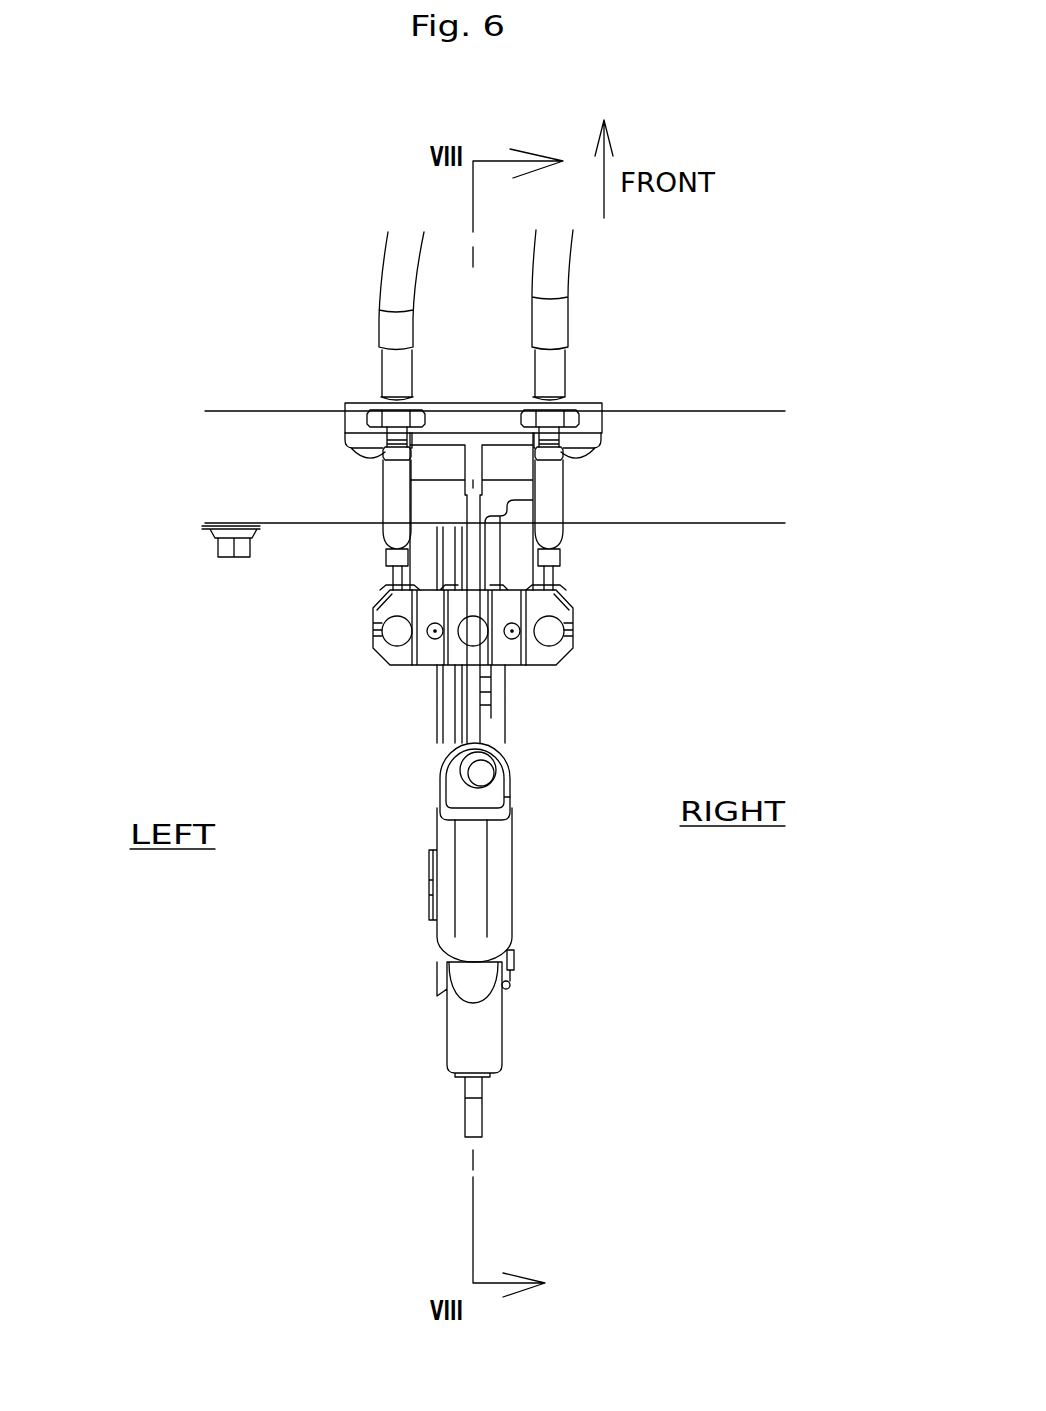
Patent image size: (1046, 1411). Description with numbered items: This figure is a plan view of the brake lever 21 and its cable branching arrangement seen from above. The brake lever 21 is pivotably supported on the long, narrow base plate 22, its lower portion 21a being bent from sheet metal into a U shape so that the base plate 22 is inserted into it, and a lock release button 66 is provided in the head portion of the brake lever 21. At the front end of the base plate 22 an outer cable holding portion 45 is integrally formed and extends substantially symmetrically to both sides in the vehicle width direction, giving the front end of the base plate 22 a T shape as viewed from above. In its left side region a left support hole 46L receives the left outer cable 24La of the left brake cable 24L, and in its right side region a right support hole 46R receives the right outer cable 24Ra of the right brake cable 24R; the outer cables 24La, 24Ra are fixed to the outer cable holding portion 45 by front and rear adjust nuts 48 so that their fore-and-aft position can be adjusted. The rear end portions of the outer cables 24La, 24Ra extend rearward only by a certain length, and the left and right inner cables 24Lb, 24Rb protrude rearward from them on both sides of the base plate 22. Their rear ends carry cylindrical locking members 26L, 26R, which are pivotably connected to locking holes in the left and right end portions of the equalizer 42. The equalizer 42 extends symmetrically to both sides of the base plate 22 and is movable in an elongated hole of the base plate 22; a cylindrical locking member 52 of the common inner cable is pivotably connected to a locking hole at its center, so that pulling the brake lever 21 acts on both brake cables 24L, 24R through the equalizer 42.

The brake lever 21 is at (482, 882).
The lower portion 21a is at (463, 1035).
The base plate 22 is at (477, 713).
The left brake cable 24L is at (400, 272).
The right brake cable 24R is at (555, 278).
The left outer cable 24La is at (386, 524).
The right outer cable 24Ra is at (577, 490).
The left inner cable 24Lb is at (392, 579).
The right inner cable 24Rb is at (552, 577).
The locking member 26L is at (395, 640).
The locking member 26R is at (550, 636).
The equalizer 42 is at (518, 658).
The outer cable holding portion 45 is at (462, 411).
The left support hole 46L is at (388, 431).
The right support hole 46R is at (560, 431).
The adjust nut 48 is at (375, 410).
The locking member 52 is at (458, 638).
The lock release button 66 is at (462, 780).